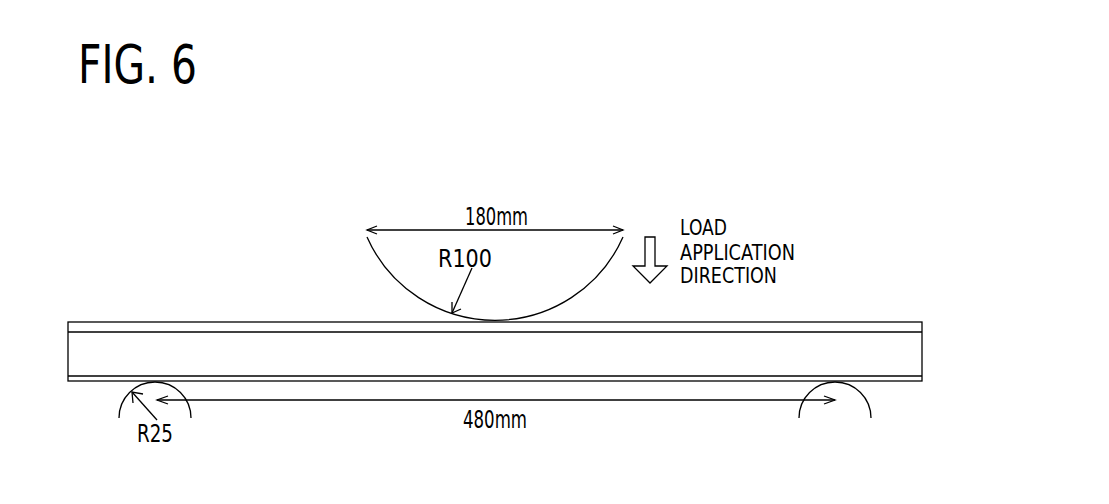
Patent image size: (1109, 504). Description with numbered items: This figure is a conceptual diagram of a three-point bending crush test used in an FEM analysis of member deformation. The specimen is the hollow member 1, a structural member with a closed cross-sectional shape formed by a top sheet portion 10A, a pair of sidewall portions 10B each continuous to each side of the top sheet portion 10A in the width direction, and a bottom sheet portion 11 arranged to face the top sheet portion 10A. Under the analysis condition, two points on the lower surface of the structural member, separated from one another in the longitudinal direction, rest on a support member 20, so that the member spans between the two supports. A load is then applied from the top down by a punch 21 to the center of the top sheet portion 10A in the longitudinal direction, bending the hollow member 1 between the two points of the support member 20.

The hollow member 1 is at (526, 326).
The top sheet portion 10A is at (195, 322).
The sidewall portion 10B is at (907, 355).
The bottom sheet portion 11 is at (900, 381).
The support member 20 is at (190, 405).
The indenter 21 is at (388, 272).